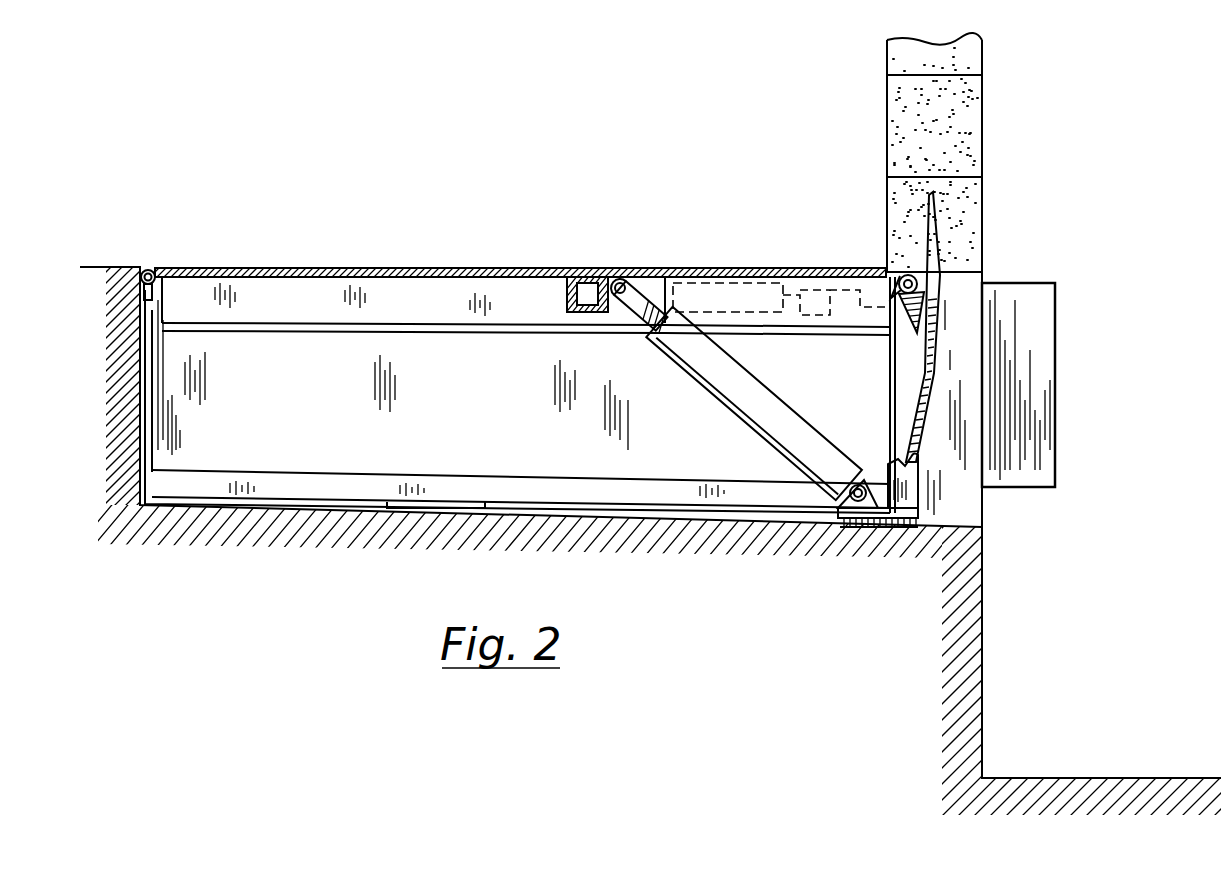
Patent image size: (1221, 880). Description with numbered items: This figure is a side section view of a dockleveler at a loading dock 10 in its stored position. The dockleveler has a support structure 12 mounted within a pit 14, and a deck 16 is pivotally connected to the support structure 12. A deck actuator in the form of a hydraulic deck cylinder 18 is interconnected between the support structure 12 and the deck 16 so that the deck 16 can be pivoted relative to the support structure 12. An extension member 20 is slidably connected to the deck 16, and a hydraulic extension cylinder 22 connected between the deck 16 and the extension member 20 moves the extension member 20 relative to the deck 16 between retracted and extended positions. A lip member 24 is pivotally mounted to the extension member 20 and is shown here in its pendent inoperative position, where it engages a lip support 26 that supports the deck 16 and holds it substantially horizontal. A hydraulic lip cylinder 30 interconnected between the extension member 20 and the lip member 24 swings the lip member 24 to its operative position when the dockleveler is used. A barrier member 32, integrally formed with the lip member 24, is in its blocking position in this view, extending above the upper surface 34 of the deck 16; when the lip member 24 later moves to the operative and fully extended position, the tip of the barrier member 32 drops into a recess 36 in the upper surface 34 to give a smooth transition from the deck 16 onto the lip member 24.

The loading dock 10 is at (718, 112).
The support structure 12 is at (458, 480).
The pit 14 is at (294, 414).
The deck 16 is at (430, 268).
The hydraulic deck cylinder 18 is at (712, 384).
The extension member 20 is at (793, 317).
The hydraulic extension cylinder 22 is at (724, 275).
The lip member 24 is at (932, 363).
The lip support 26 is at (905, 477).
The hydraulic lip cylinder 30 is at (847, 272).
The barrier member 32 is at (938, 213).
The upper surface 34 is at (515, 262).
The recess 36 is at (885, 270).